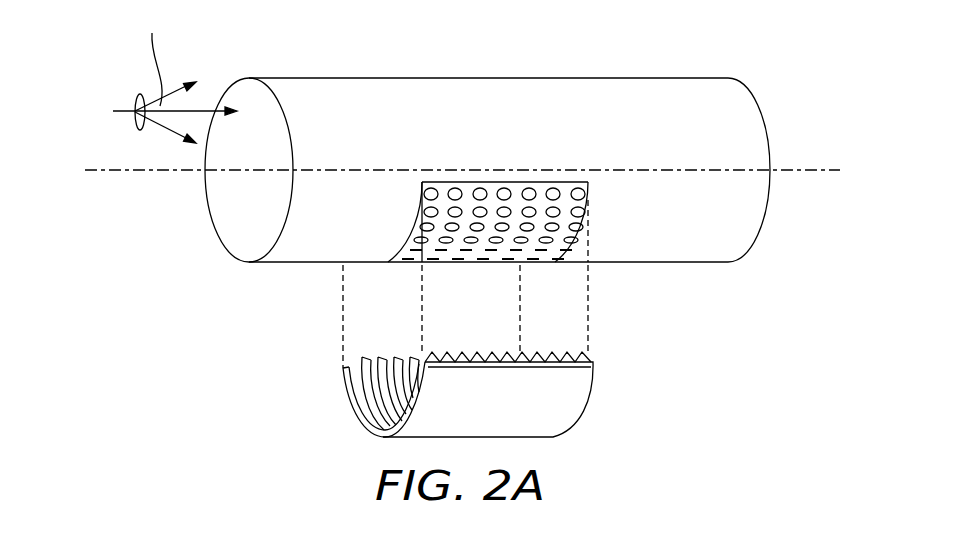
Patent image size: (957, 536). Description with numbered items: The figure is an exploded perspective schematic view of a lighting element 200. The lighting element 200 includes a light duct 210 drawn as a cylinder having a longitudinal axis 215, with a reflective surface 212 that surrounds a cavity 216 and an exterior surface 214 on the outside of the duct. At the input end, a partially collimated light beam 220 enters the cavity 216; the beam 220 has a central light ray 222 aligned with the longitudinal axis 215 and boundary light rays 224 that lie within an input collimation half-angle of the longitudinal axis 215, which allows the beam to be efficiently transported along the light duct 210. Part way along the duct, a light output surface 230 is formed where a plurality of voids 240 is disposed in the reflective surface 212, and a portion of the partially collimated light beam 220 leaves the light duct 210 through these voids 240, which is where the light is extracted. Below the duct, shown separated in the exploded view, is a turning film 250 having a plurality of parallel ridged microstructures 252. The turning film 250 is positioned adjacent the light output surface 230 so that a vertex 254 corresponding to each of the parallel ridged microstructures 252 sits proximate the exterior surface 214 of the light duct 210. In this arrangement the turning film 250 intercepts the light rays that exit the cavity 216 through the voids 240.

The lighting element 200 is at (741, 30).
The light duct 210 is at (640, 78).
The reflective surface 212 is at (238, 237).
The exterior surface 214 is at (717, 250).
The longitudinal axis 215 is at (799, 170).
The cavity 216 is at (228, 196).
The partially collimated light beam 220 is at (138, 101).
The central light ray 222 is at (196, 110).
The boundary light rays 224 is at (153, 126).
The light output surface 230 is at (410, 229).
The voids 240 is at (560, 266).
The turning film 250 is at (600, 409).
The parallel ridged microstructures 252 is at (362, 393).
The vertex 254 is at (378, 360).